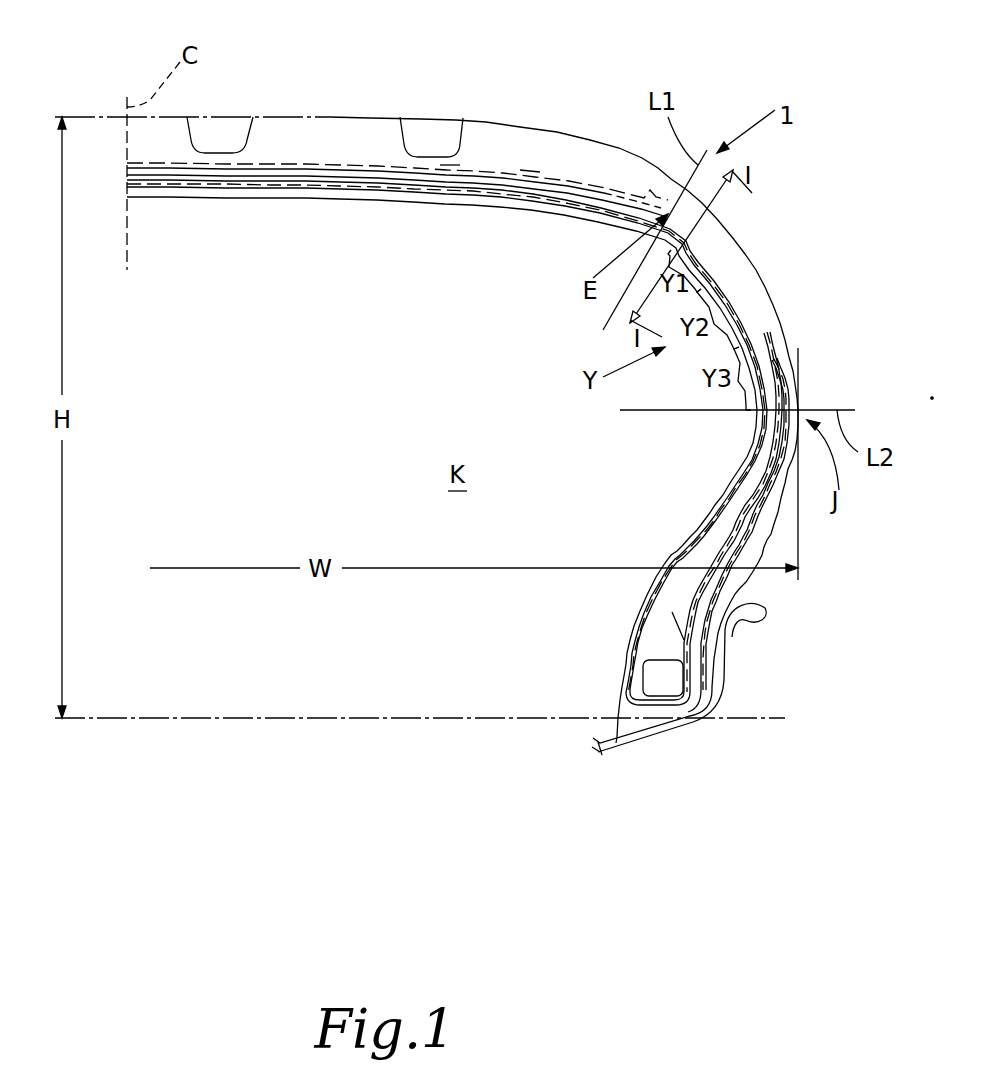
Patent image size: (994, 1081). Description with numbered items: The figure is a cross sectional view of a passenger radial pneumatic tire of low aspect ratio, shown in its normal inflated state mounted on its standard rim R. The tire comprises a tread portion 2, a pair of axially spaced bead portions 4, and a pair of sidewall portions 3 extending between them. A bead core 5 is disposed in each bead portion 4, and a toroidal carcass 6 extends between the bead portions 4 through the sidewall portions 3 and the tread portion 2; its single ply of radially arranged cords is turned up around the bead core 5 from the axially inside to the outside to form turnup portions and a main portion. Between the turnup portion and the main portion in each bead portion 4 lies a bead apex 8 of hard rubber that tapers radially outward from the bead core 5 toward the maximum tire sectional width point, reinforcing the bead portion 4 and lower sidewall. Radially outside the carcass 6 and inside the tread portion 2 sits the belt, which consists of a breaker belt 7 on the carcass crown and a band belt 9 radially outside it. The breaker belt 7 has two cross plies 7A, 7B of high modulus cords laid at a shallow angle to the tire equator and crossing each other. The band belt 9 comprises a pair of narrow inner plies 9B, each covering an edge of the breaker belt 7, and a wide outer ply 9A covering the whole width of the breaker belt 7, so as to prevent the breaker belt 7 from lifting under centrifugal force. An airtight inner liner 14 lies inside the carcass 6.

The tread portion 2 is at (312, 128).
The sidewall portion 3 is at (800, 333).
The bead portion 4 is at (620, 645).
The bead core 5 is at (667, 683).
The carcass 6 is at (425, 190).
The breaker belt 7 is at (397, 248).
The breaker belt ply 7A is at (272, 177).
The breaker belt ply 7B is at (348, 168).
The bead apex 8 is at (678, 613).
The band belt 9 is at (397, 102).
The outer ply 9A is at (458, 167).
The inner ply 9B is at (538, 165).
The inner liner 14 is at (540, 202).
The standard rim R is at (652, 730).